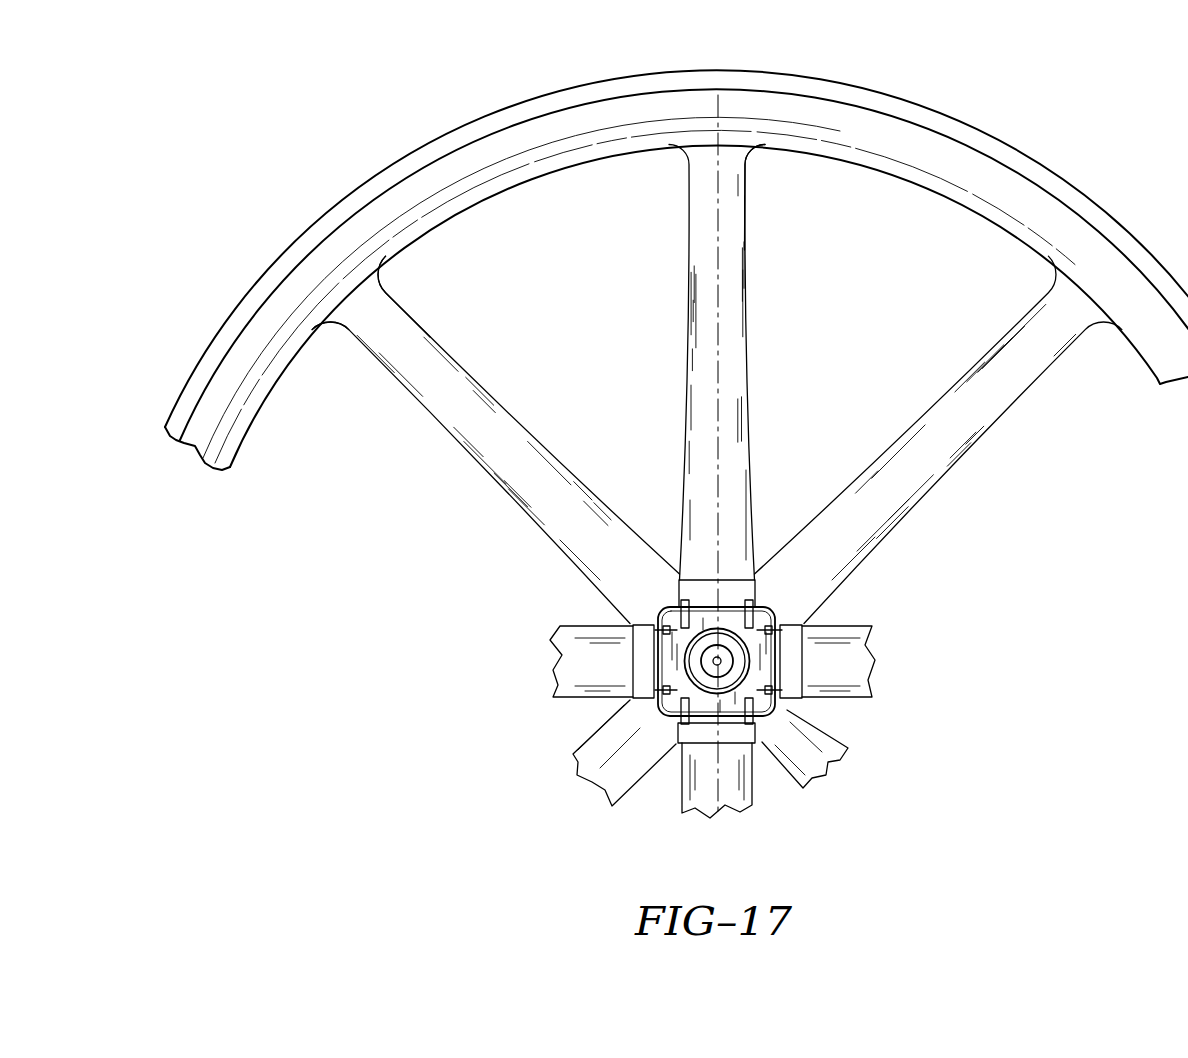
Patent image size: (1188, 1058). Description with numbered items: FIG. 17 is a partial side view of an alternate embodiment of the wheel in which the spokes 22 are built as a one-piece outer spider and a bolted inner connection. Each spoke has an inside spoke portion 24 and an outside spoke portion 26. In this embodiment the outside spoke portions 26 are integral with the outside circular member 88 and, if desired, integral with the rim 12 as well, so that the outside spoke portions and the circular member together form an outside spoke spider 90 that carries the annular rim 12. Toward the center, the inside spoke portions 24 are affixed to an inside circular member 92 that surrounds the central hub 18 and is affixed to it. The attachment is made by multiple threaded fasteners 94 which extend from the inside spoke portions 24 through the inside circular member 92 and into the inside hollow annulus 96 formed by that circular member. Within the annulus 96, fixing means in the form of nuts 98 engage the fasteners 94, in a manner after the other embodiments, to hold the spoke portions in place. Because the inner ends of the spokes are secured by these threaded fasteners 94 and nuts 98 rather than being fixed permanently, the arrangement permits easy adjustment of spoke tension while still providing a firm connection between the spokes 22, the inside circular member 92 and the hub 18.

The rim 12 is at (264, 259).
The hub 18 is at (718, 70).
The spokes 22 is at (528, 432).
The inside spoke portions 24 is at (632, 595).
The outside spoke portions 26 is at (395, 340).
The outside circular member 88 is at (321, 273).
The outside spoke spider 90 is at (420, 267).
The inside circular member 92 is at (660, 668).
The threaded fasteners 94 is at (782, 617).
The inside hollow annulus 96 is at (684, 620).
The nuts 98 is at (780, 700).